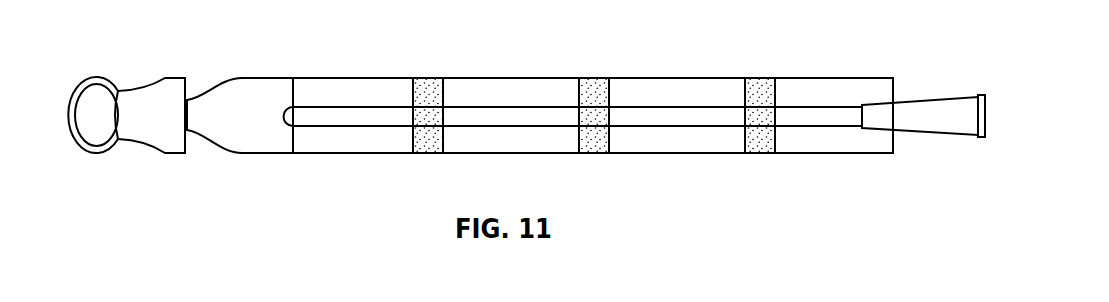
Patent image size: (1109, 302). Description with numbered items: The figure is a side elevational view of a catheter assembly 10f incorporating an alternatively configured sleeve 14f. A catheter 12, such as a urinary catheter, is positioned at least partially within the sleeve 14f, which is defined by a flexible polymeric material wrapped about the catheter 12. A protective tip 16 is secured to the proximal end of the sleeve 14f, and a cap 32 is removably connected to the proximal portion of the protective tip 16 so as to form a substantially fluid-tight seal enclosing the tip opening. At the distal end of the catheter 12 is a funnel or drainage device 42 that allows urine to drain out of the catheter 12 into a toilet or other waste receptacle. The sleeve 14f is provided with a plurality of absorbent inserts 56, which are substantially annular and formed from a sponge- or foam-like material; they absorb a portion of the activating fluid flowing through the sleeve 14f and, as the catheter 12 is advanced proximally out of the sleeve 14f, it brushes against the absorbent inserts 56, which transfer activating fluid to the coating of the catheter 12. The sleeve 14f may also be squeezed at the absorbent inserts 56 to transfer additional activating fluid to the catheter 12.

The catheter assembly 10f is at (782, 35).
The cap 32 is at (143, 92).
The protective tip 16 is at (238, 77).
The sleeve 14f is at (503, 78).
The catheter 12 is at (350, 107).
The absorbent inserts 56 is at (427, 155).
The funnel or drainage device 42 is at (957, 98).